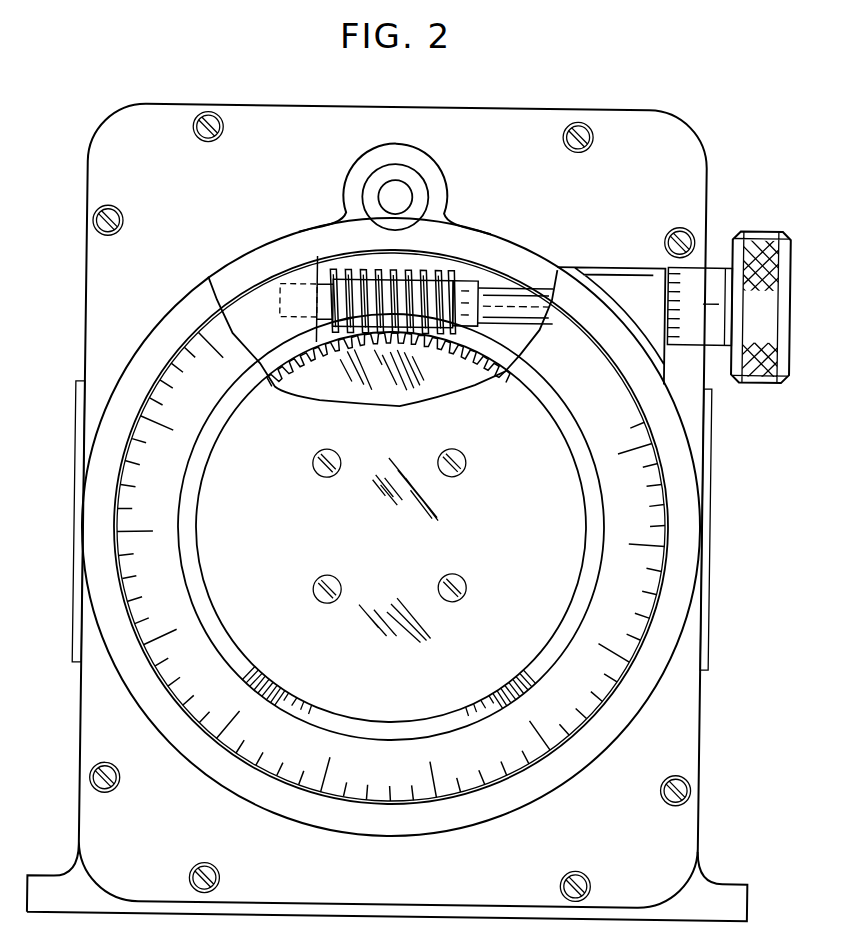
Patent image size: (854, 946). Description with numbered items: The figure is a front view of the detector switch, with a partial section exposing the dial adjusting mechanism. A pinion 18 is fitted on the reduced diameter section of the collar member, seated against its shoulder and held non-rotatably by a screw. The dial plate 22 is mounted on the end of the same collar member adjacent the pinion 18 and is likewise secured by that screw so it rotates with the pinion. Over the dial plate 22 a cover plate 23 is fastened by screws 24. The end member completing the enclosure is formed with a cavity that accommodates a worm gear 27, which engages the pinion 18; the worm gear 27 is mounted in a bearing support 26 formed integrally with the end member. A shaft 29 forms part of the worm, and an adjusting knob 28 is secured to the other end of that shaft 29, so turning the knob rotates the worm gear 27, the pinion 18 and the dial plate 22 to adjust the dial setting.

The pinion 18 is at (467, 385).
The dial plate 22 is at (170, 355).
The cover plate 23 is at (275, 385).
The screws 24 is at (458, 476).
The bearing support 26 is at (622, 266).
The worm gear 27 is at (374, 275).
The adjusting knob 28 is at (770, 228).
The shaft 29 is at (492, 325).